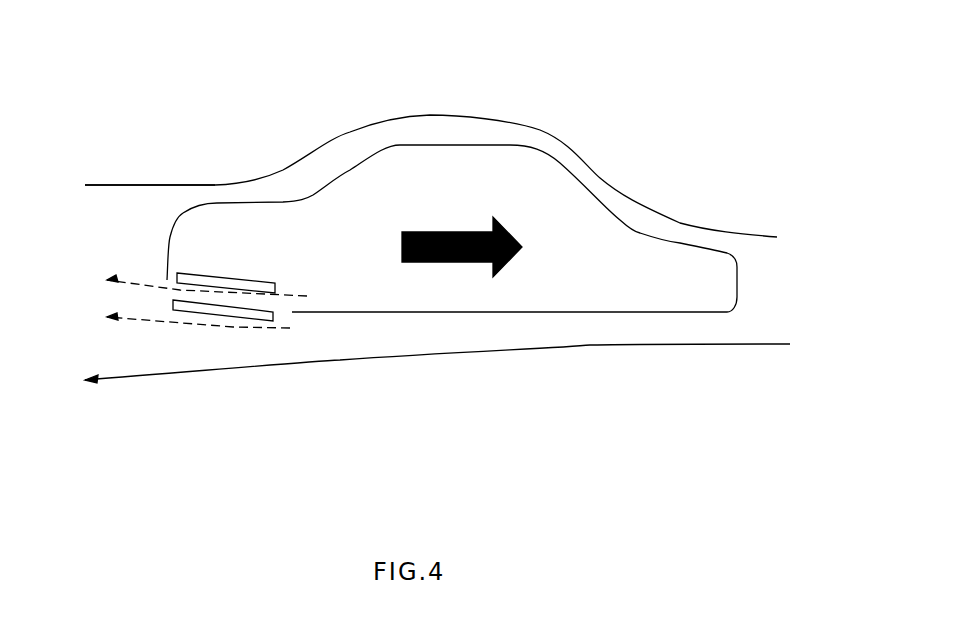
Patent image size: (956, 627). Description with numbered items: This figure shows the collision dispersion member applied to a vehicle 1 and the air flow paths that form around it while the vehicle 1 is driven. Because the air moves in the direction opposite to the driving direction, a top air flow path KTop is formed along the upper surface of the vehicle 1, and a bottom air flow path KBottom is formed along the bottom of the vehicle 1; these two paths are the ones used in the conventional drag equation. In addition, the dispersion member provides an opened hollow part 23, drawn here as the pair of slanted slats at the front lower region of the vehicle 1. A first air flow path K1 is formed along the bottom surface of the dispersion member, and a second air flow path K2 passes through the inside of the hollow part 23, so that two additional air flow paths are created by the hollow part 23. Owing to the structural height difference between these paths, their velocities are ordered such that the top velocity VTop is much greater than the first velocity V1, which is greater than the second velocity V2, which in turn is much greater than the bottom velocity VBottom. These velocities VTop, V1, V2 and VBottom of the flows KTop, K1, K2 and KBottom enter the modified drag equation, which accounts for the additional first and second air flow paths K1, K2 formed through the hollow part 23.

The vehicle 1 is at (568, 172).
The hollow part 23 is at (218, 300).
The top air flow path KTop is at (450, 115).
The bottom air flow path KBottom is at (467, 357).
The first air flow path K1 is at (233, 327).
The second air flow path K2 is at (295, 293).
The velocity of the top air flow VTop is at (136, 171).
The velocity of the bottom air flow VBottom is at (97, 394).
The velocity of the first air flow V1 is at (96, 320).
The velocity of the second air flow V2 is at (95, 275).